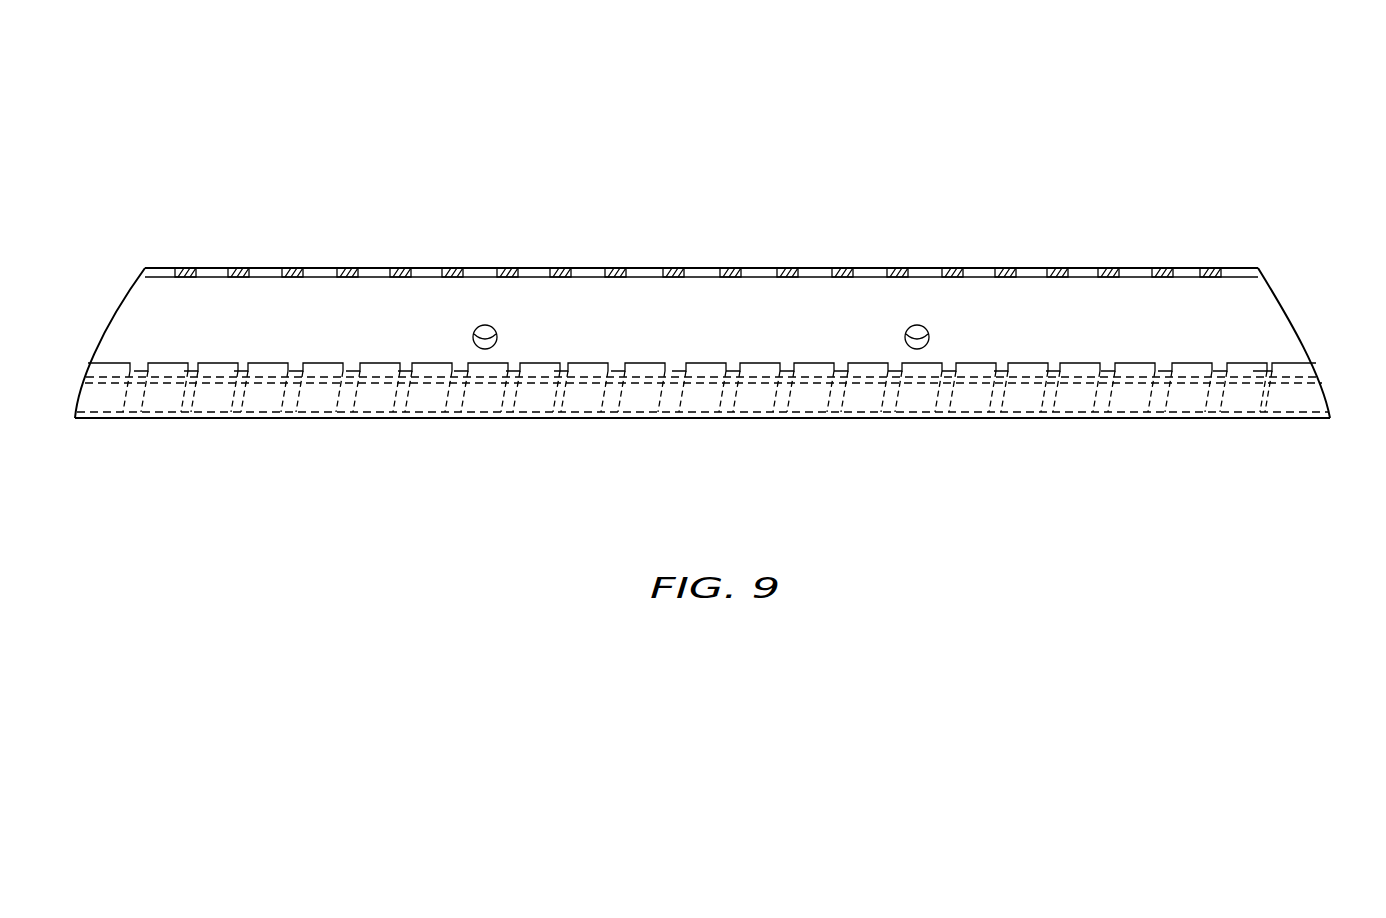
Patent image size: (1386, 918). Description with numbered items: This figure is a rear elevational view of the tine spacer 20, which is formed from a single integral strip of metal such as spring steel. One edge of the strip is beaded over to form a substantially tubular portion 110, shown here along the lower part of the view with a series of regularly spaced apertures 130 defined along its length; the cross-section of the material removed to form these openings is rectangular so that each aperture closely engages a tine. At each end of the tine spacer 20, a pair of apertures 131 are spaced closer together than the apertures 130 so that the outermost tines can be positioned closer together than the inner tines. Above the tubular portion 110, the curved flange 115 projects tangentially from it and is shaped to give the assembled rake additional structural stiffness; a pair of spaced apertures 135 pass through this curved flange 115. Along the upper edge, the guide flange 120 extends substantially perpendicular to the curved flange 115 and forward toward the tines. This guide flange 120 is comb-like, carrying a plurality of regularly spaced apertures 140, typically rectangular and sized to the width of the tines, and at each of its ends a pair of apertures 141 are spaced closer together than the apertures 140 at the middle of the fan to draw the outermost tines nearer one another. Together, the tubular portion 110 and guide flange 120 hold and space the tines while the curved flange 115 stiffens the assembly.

The tine spacer 20 is at (1020, 106).
The tubular portion 110 is at (1320, 360).
The curved flange 115 is at (1272, 284).
The guide flange 120 is at (1005, 264).
The apertures 130 is at (612, 424).
The apertures 131 is at (165, 424).
The apertures 135 is at (497, 333).
The apertures 140 is at (645, 264).
The apertures 141 is at (262, 264).